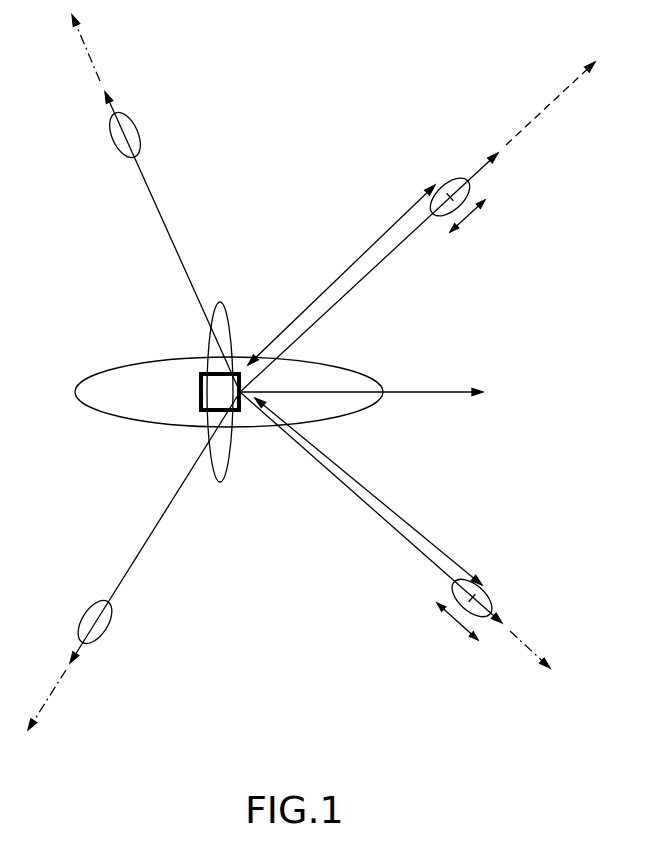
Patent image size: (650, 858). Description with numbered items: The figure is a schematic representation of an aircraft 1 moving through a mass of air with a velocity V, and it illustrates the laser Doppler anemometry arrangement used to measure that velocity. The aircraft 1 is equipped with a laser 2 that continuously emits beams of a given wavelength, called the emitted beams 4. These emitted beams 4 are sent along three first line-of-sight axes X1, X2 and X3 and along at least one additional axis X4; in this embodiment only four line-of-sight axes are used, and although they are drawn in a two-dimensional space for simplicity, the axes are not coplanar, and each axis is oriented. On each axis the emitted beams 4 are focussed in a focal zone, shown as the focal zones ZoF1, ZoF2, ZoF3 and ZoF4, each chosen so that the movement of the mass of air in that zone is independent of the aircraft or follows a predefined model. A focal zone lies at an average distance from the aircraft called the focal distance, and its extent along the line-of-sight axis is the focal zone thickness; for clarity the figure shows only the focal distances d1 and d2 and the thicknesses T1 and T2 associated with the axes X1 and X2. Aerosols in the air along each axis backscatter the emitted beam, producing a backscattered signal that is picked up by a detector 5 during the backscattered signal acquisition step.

The aircraft 1 is at (113, 368).
The laser 2 is at (215, 388).
The emitted beams 4 is at (168, 238).
The detector 5 is at (200, 403).
The focal zone on axis X1 ZoF1 is at (488, 597).
The focal zone on axis X2 ZoF2 is at (455, 182).
The focal zone on axis X3 ZoF3 is at (112, 143).
The focal zone on axis X4 ZoF4 is at (100, 600).
The focal distance of axis X1 d1 is at (392, 508).
The focal distance of axis X2 d2 is at (357, 262).
The focal zone thickness of axis X1 T1 is at (453, 622).
The focal zone thickness of axis X2 T2 is at (470, 217).
The first line-of-sight axis X1 is at (556, 634).
The second line-of-sight axis X2 is at (564, 57).
The third line-of-sight axis X3 is at (44, 24).
The additional line-of-sight axis X4 is at (59, 732).
The velocity of the aircraft V is at (466, 357).